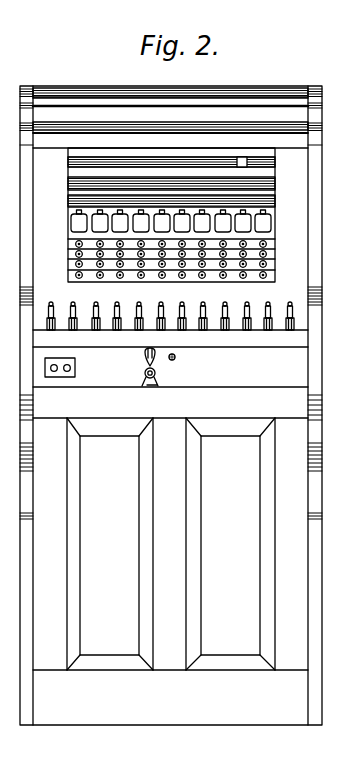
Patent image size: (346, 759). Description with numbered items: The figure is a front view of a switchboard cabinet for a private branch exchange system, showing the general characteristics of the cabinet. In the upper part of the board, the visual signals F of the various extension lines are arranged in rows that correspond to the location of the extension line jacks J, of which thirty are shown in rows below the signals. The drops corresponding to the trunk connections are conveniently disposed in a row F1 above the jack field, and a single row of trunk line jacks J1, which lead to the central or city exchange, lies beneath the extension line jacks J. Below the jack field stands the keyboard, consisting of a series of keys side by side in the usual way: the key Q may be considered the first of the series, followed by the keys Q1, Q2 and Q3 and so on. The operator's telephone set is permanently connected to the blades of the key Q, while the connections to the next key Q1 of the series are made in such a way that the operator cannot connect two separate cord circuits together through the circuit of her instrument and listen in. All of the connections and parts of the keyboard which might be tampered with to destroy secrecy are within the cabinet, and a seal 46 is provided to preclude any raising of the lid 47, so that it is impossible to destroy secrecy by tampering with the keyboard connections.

The visual signals F is at (243, 157).
The row of drops F1 is at (281, 225).
The extension line jacks J is at (75, 244).
The trunk line jacks J1 is at (282, 272).
The key Q is at (192, 306).
The key Q1 is at (272, 311).
The key Q2 is at (251, 311).
The key Q3 is at (228, 308).
The seal 46 is at (143, 372).
The lid 47 is at (248, 342).